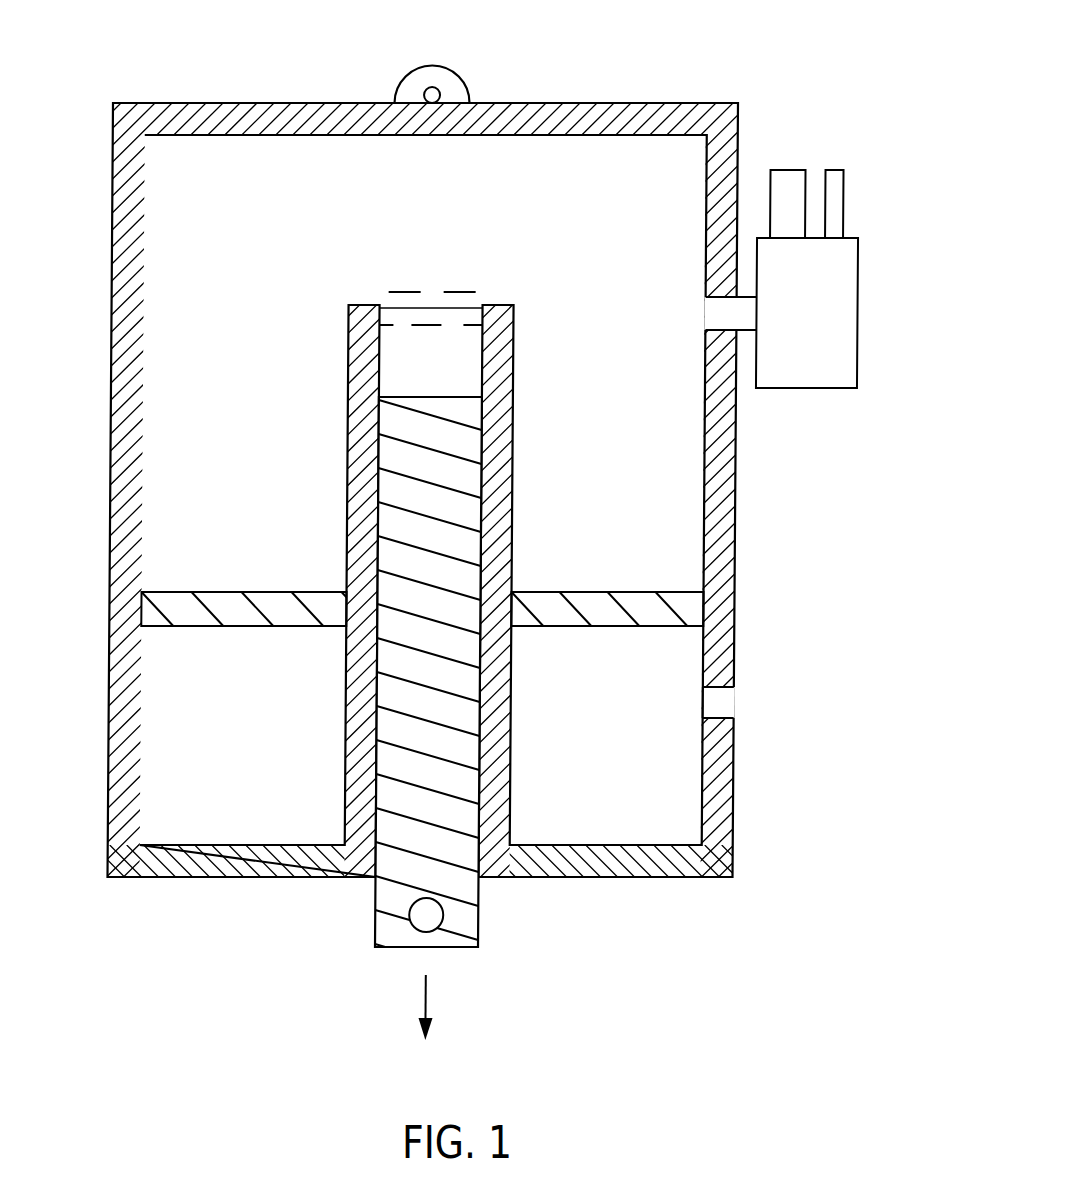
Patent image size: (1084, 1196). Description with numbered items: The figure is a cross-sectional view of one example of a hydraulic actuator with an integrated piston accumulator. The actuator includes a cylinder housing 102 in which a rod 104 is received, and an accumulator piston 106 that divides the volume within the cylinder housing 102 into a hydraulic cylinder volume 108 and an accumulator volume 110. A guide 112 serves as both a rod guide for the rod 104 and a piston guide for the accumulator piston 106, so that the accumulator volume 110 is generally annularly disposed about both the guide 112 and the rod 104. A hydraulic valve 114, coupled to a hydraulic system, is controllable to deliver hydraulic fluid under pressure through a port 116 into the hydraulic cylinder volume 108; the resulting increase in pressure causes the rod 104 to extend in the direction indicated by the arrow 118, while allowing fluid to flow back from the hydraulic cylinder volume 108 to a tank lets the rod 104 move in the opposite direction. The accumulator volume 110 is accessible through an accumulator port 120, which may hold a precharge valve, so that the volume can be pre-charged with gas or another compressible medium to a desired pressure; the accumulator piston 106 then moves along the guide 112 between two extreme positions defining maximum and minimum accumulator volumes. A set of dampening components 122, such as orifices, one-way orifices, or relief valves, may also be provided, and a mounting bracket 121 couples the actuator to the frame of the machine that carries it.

The cylinder housing 102 is at (217, 105).
The rod 104 is at (464, 948).
The accumulator piston 106 is at (613, 590).
The hydraulic cylinder volume 108 is at (626, 418).
The accumulator volume 110 is at (609, 740).
The guide 112 is at (583, 862).
The hydraulic valve 114 is at (807, 388).
The port 116 is at (706, 313).
The arrow 118 is at (428, 997).
The accumulator port 120 is at (736, 702).
The mounting bracket 121 is at (430, 62).
The dampening components 122 is at (432, 292).